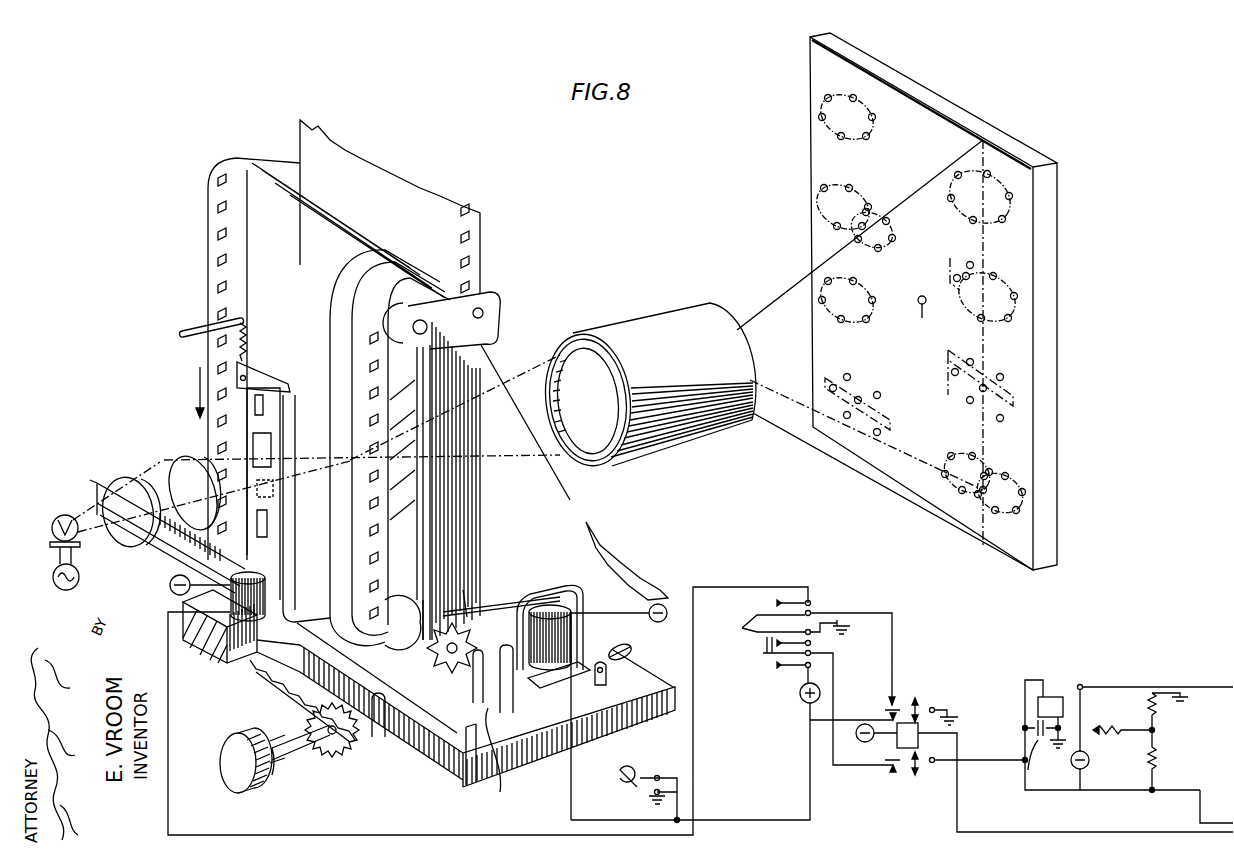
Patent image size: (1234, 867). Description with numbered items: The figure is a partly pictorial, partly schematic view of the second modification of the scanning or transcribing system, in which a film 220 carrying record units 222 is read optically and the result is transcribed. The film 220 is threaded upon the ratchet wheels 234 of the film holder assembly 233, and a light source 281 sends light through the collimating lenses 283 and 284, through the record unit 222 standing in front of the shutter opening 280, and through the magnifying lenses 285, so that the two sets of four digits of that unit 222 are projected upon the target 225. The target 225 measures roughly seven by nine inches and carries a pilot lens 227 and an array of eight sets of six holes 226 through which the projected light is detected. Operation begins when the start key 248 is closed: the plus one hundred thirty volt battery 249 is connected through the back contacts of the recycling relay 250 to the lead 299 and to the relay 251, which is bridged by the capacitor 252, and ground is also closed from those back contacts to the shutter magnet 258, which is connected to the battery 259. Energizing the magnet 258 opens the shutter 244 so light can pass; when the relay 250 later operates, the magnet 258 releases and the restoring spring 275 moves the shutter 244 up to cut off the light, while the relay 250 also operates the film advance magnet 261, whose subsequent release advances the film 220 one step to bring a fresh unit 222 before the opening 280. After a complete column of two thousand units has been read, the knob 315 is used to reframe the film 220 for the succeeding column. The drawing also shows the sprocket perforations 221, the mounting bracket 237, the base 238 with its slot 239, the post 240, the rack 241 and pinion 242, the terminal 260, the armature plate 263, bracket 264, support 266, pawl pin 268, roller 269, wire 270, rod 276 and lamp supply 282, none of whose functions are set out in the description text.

The film 220 is at (408, 180).
The sprocket holes 221 is at (470, 240).
The record unit of film 222 is at (343, 262).
The target 225 is at (1047, 395).
The holes 226 is at (947, 180).
The pilot lens 227 is at (922, 318).
The film holder frame 233 is at (197, 444).
The ratchet wheels 234 is at (407, 300).
The mounting bracket 237 is at (483, 344).
The base plate 238 is at (425, 720).
The slot 239 is at (637, 652).
The post 240 is at (490, 777).
The rack 241 is at (310, 724).
The pinion gear 242 is at (373, 728).
The shutter 244 is at (278, 395).
The start key 248 is at (742, 626).
The battery 249 is at (803, 703).
The recycling relay 250 is at (895, 742).
The relay 251 is at (1050, 700).
The capacitor 252 is at (1036, 745).
The shutter magnet 258 is at (253, 650).
The battery 259 is at (170, 585).
The terminal 260 is at (659, 604).
The film advance magnet 261 is at (553, 607).
The armature plate 263 is at (560, 697).
The bracket 264 is at (570, 586).
The support plate 266 is at (598, 686).
The pawl pin 268 is at (483, 607).
The film drive roller 269 is at (397, 620).
The return spring wire 270 is at (488, 712).
The restoring spring 275 is at (247, 340).
The guide rod 276 is at (200, 328).
The shutter opening 280 is at (267, 446).
The light source 281 is at (77, 512).
The power source 282 is at (63, 588).
The collimating lens 283 is at (123, 543).
The collimating lens 284 is at (187, 478).
The magnifying lenses 285 is at (652, 330).
The lead 299 is at (1213, 785).
The knob 315 is at (230, 752).